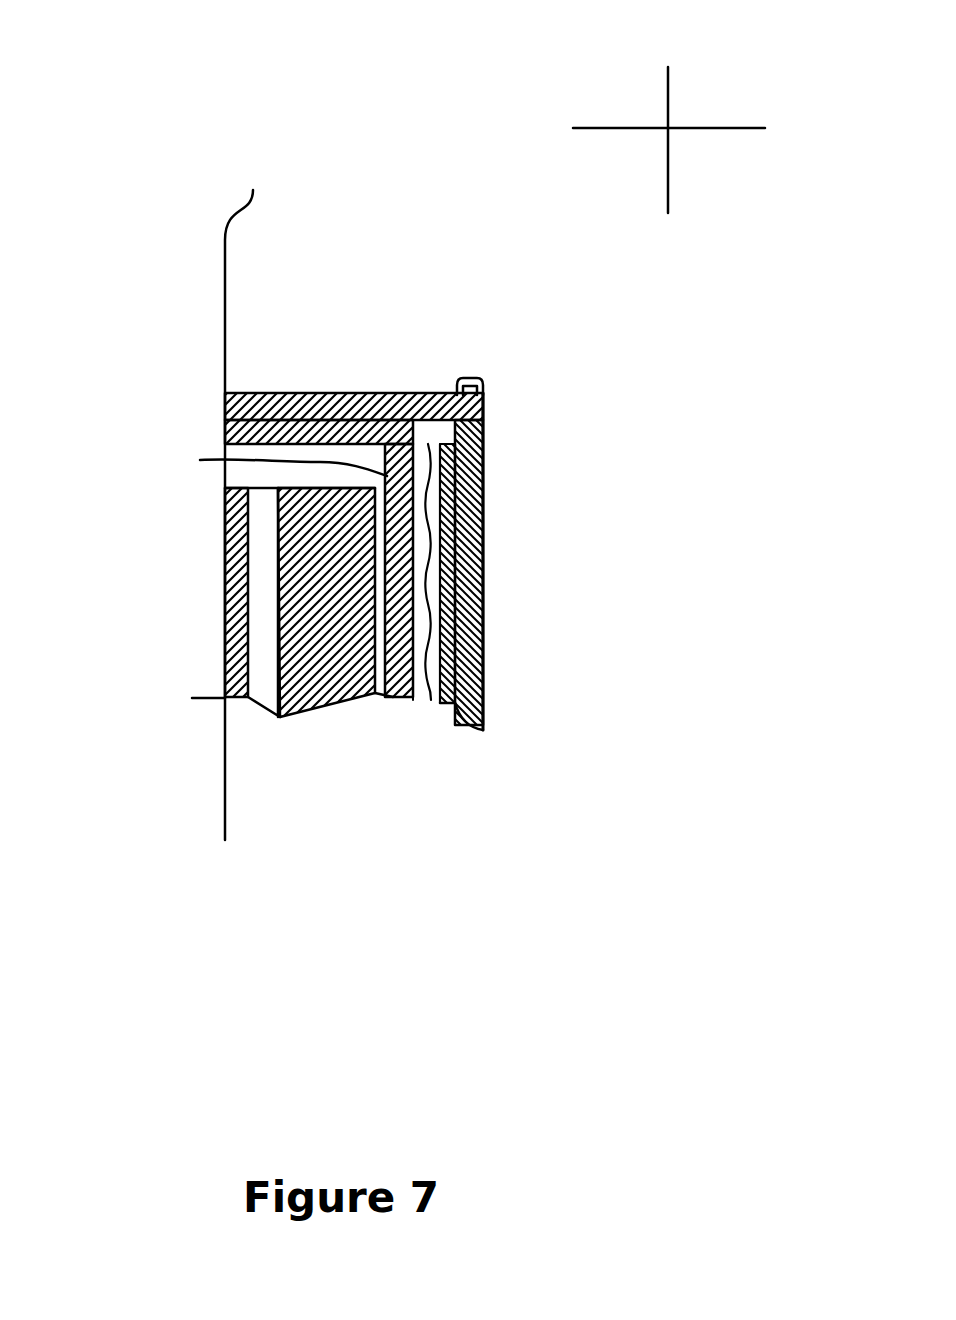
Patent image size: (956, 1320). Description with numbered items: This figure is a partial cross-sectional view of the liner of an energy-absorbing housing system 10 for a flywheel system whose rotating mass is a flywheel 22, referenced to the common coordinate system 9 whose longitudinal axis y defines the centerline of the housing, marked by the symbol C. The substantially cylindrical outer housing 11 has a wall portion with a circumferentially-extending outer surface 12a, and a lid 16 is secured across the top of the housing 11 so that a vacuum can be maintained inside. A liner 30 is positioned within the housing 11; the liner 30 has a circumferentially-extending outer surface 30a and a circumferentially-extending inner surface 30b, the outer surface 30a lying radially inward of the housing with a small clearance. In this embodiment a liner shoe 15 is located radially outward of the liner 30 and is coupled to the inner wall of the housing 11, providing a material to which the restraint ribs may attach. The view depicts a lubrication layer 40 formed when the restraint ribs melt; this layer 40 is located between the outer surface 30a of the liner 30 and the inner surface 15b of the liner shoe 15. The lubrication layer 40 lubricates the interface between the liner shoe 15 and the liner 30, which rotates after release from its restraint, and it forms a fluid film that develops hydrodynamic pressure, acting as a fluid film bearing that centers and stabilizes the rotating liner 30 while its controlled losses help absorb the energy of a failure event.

The coordinate system 9 is at (745, 70).
The energy-absorbing housing system 10 is at (400, 472).
The outer housing 11 is at (485, 513).
The outer surface 12a is at (485, 590).
The liner shoe 15 is at (558, 554).
The inner surface 15b is at (447, 707).
The lid 16 is at (392, 393).
The flywheel 22 is at (323, 707).
The liner 30 is at (390, 700).
The outer surface 30a is at (430, 393).
The inner surface 30b is at (200, 460).
The lubrication layer 40 is at (430, 705).